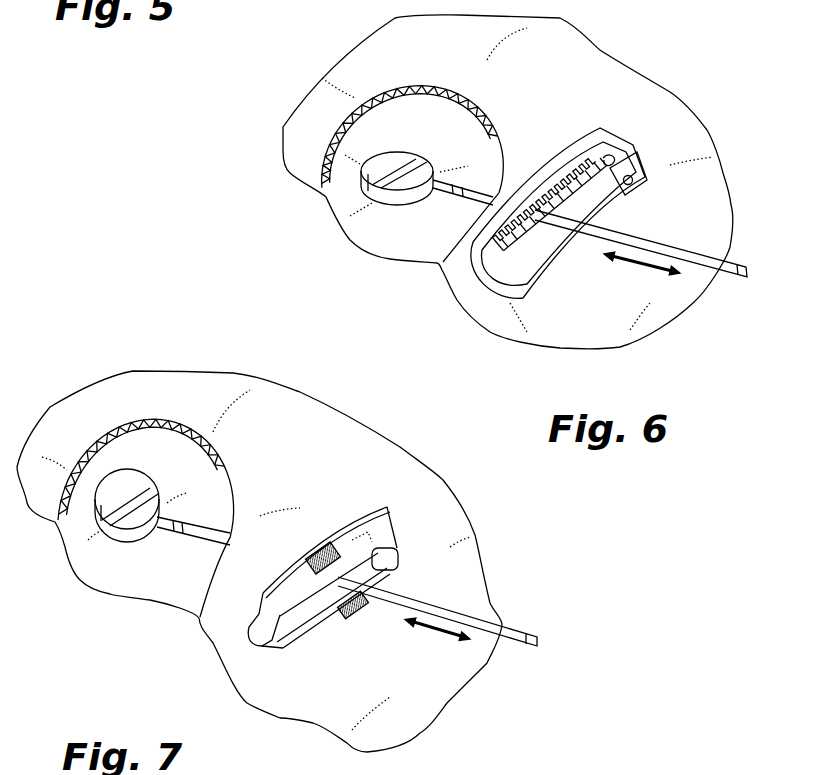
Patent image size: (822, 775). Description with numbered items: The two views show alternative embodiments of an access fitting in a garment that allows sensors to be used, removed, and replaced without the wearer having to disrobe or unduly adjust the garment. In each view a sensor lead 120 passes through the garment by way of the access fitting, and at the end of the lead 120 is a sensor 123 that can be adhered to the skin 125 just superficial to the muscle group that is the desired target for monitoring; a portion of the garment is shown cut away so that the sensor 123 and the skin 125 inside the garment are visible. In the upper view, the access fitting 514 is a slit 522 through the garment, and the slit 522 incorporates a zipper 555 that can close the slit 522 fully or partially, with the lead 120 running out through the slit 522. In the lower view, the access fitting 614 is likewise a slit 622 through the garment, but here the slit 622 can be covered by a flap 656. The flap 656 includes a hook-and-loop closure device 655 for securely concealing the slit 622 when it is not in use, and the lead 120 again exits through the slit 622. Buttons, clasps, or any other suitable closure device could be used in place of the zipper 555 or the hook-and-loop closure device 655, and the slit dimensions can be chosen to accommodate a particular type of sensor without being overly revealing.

In FIG. 6, the sensor lead 120 is at (741, 266).
In FIG. 7, the sensor lead 120 is at (523, 636).
In FIG. 6, the sensor 123 is at (394, 160).
In FIG. 7, the sensor 123 is at (133, 483).
In FIG. 6, the skin 125 is at (387, 243).
In FIG. 7, the skin 125 is at (103, 578).
In FIG. 6, the access fitting 514 is at (608, 133).
In FIG. 6, the slit 522 is at (557, 163).
In FIG. 6, the zipper 555 is at (638, 167).
In FIG. 7, the access fitting 614 is at (397, 545).
In FIG. 7, the slit 622 is at (395, 573).
In FIG. 7, the hook-and-loop closure device 655 is at (327, 540).
In FIG. 7, the flap 656 is at (366, 535).